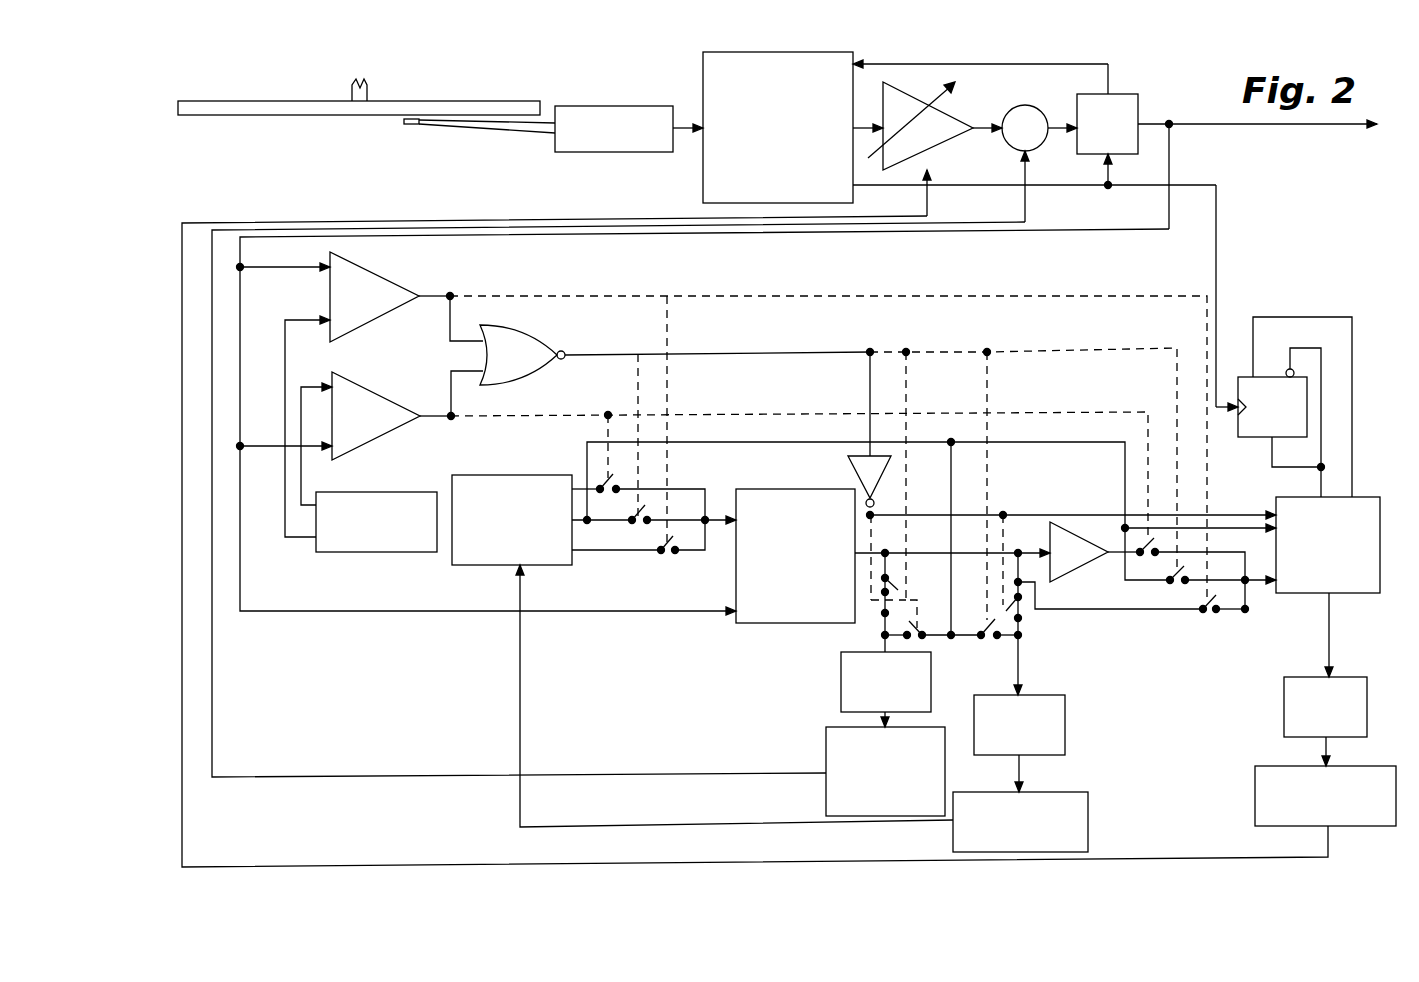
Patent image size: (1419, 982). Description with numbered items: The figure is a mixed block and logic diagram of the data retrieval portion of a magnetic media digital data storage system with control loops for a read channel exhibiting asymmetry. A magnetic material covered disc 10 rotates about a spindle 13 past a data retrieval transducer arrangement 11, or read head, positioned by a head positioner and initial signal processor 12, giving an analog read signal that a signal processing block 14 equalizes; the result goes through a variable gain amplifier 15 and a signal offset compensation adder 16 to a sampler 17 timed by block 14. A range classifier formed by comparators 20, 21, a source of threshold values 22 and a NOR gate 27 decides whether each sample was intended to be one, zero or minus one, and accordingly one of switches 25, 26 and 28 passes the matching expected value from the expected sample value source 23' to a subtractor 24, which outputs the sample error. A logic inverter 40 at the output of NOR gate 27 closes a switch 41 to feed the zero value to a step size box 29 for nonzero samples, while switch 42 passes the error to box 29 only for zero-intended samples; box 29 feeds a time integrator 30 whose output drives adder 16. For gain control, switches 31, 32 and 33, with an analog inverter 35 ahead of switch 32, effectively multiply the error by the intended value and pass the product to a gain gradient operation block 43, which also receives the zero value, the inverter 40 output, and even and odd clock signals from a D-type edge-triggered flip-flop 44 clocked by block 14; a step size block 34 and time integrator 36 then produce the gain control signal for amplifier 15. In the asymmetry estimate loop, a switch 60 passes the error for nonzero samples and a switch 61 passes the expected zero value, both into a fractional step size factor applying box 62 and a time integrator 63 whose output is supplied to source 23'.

The magnetic material covered disc 10 is at (252, 118).
The data retrieval transducer arrangement 11 is at (437, 132).
The head positioner and initial signal processor 12 is at (572, 152).
The spindle 13 is at (368, 90).
The signal processing block 14 is at (703, 172).
The variable gain amplifier 15 is at (943, 143).
The signal offset compensation adder 16 is at (1027, 106).
The sampler 17 is at (1122, 94).
The comparator 20 is at (382, 278).
The comparator 21 is at (381, 391).
The source of threshold values 22 is at (357, 492).
The expected sample value source 23' is at (512, 503).
The subtractor 24 is at (757, 468).
The switch 25 is at (668, 558).
The switch 26 is at (608, 477).
The NOR gate 27 is at (523, 333).
The switch 28 is at (632, 527).
The step size box 29 is at (841, 658).
The time integrator 30 is at (826, 726).
The switch 31 is at (1212, 598).
The switch 32 is at (1140, 551).
The switch 33 is at (1185, 567).
The step size block 34 is at (1345, 672).
The analog inverter 35 is at (1065, 575).
The time integrator 36 is at (1268, 766).
The logic inverter 40 is at (850, 462).
The switch 41 is at (923, 633).
The switch 42 is at (889, 577).
The gain gradient operation block 43 is at (1300, 594).
The D-type edge-triggered flip-flop 44 is at (1259, 438).
The switch 60 is at (1022, 618).
The switch 61 is at (1000, 640).
The fractional step size factor applying box 62 is at (1040, 694).
The time integrator 63 is at (1058, 792).